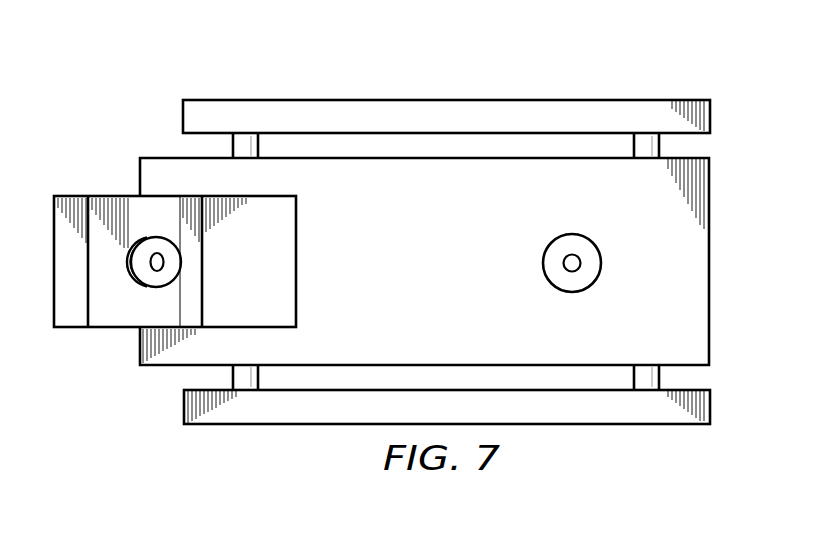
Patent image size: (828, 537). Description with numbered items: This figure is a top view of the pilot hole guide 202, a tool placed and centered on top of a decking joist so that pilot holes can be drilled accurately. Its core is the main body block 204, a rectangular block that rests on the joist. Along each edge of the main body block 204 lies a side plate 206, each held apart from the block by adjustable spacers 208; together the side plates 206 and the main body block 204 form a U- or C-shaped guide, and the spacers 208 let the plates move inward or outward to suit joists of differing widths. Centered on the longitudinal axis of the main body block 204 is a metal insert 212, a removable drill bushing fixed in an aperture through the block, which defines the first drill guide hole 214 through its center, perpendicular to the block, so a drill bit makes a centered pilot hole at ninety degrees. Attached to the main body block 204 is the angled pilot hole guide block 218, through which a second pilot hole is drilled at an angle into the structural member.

The pilot hole guide 202 is at (538, 61).
The main body block 204 is at (153, 177).
The side plates 206 is at (343, 108).
The adjustable spacers 208 is at (233, 147).
The insert 212 is at (607, 241).
The first drill guide hole 214 is at (581, 264).
The angled pilot hole guide block 218 is at (104, 334).